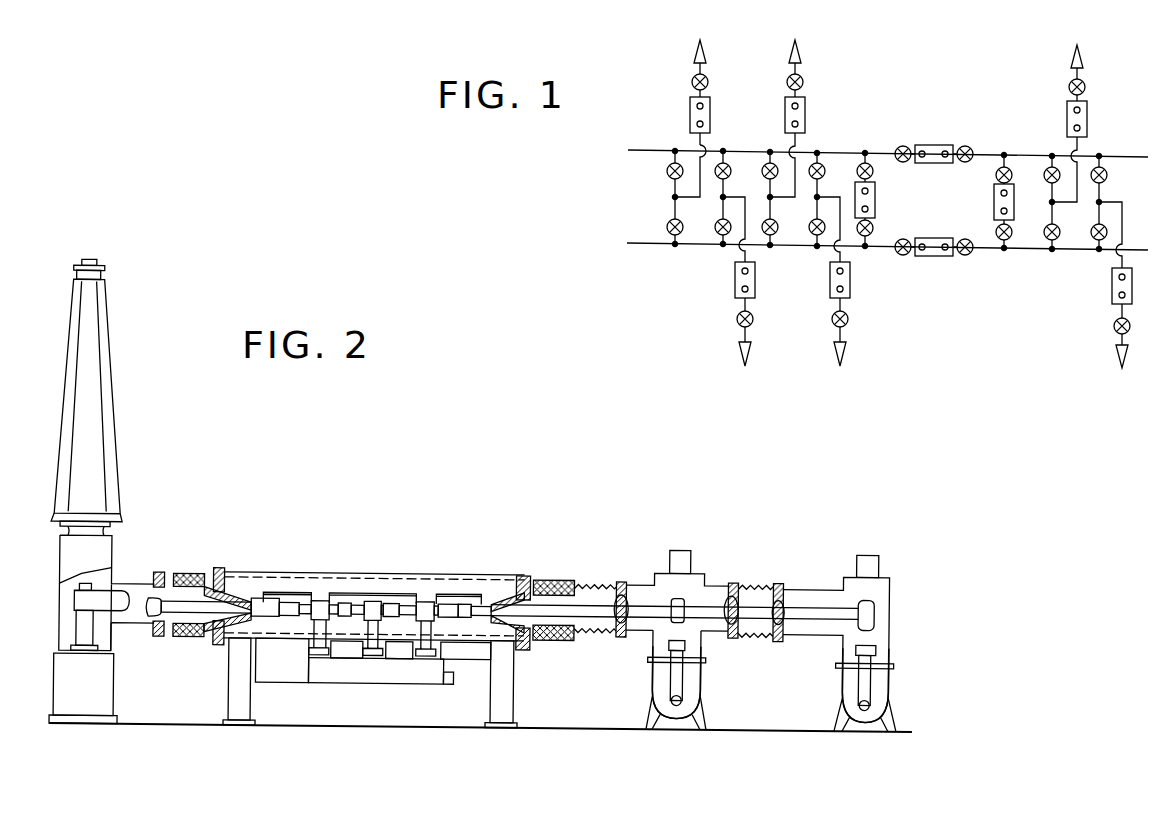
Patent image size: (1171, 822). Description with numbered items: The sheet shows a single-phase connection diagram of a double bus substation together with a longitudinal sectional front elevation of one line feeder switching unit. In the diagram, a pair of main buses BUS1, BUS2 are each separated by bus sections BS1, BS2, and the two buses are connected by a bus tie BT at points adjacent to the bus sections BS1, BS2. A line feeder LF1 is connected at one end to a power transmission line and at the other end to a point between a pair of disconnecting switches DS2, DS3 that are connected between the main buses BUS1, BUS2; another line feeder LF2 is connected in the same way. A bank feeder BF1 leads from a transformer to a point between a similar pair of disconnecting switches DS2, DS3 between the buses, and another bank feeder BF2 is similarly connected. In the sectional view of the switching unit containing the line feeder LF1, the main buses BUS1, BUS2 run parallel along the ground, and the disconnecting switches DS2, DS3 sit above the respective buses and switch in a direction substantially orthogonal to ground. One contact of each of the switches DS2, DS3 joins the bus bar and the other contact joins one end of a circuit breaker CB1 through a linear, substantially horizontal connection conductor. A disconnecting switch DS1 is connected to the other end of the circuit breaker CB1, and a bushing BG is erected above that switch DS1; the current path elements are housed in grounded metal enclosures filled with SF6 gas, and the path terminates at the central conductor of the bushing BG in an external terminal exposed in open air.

In FIG. 1, the line feeder LF1 is at (690, 41).
In FIG. 2, the line feeder LF1 is at (425, 531).
In FIG. 1, the line feeder LF2 is at (785, 128).
In FIG. 1, the disconnecting switch DS1 is at (666, 80).
In FIG. 2, the disconnecting switch DS1 is at (133, 578).
In FIG. 1, the disconnecting switch DS2 is at (649, 173).
In FIG. 2, the disconnecting switch DS2 is at (640, 584).
In FIG. 1, the disconnecting switch DS3 is at (649, 222).
In FIG. 2, the disconnecting switch DS3 is at (823, 594).
In FIG. 1, the circuit breaker CB1 is at (667, 121).
In FIG. 2, the circuit breaker CB1 is at (306, 575).
In FIG. 1, the main bus BUS1 is at (844, 154).
In FIG. 2, the main bus BUS1 is at (648, 699).
In FIG. 1, the main bus BUS2 is at (844, 250).
In FIG. 2, the main bus BUS2 is at (840, 699).
In FIG. 1, the bus section BS1 is at (934, 136).
In FIG. 1, the bus section BS2 is at (934, 232).
In FIG. 1, the bus tie BT is at (886, 199).
In FIG. 1, the bank feeder BF1 is at (736, 277).
In FIG. 1, the bank feeder BF2 is at (834, 278).
In FIG. 2, the bushing BG is at (110, 378).